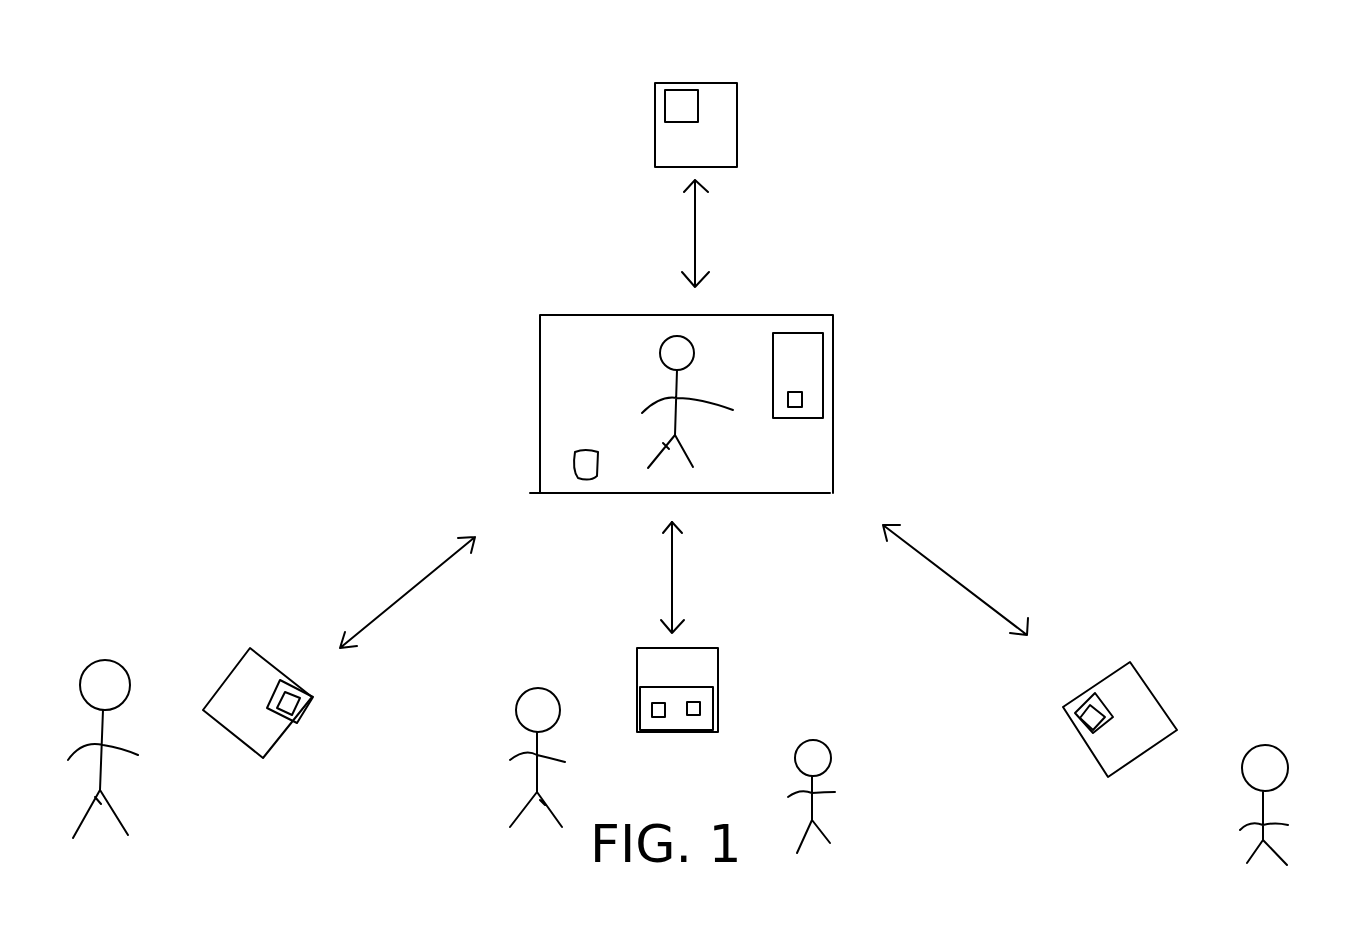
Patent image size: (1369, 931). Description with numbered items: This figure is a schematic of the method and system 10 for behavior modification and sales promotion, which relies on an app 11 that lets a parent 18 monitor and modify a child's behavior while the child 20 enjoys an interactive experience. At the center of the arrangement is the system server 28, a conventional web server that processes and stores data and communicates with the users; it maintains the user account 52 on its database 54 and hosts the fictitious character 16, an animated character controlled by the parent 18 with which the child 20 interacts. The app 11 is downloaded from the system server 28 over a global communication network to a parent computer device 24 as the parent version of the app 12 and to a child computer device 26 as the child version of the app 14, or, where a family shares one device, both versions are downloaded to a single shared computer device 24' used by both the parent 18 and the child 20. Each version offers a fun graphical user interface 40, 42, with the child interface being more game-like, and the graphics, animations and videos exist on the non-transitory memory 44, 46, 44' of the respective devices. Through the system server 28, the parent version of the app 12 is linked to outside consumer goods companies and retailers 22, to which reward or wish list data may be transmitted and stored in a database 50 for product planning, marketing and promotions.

The method and system for behavior modification and sales promotion 10 is at (1036, 202).
The app 11 is at (598, 480).
The parent version of the app 12 is at (303, 713).
The child version of the app 14 is at (708, 720).
The fictitious character 16 is at (657, 357).
The parent 18 is at (132, 650).
The child 20 is at (820, 740).
The consumer goods companies and retailers 22 is at (710, 75).
The parent computer device 24 is at (257, 661).
The shared computer device 24' is at (712, 664).
The child computer device 26 is at (1115, 663).
The system server 28 is at (792, 312).
The graphical user interface 40 is at (250, 717).
The graphical user interface 42 is at (1135, 710).
The non-transitory memory 44 is at (292, 671).
The non-transitory memory 44' is at (714, 682).
The non-transitory memory 46 is at (1080, 740).
The database 50 is at (677, 83).
The user account 52 is at (807, 400).
The database 54 is at (822, 367).